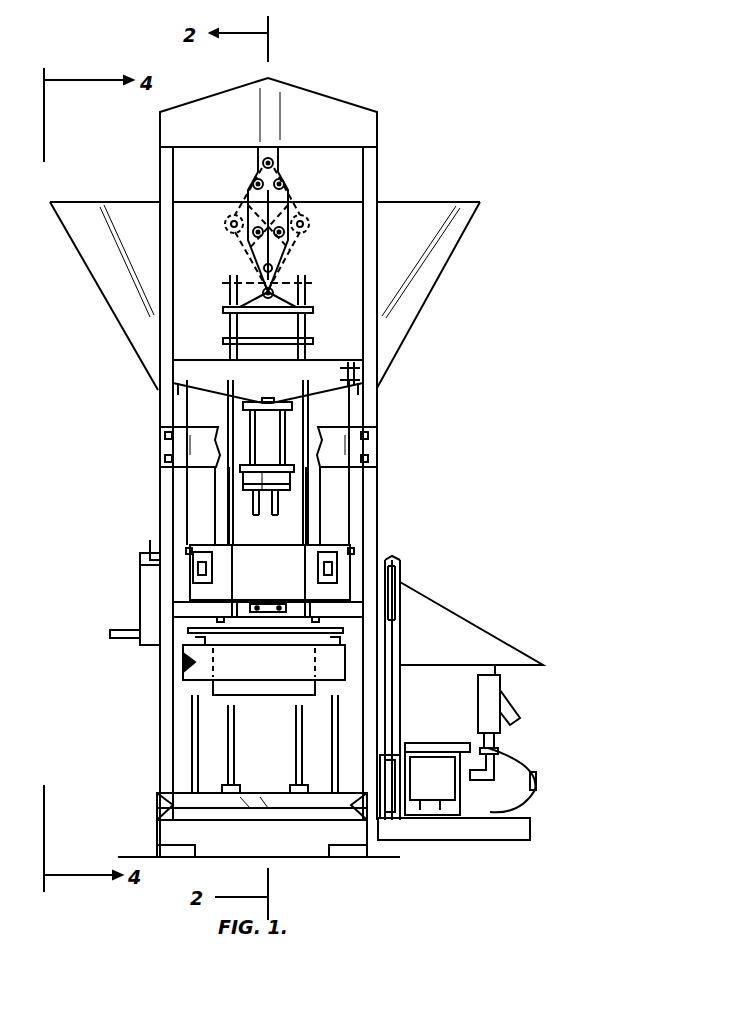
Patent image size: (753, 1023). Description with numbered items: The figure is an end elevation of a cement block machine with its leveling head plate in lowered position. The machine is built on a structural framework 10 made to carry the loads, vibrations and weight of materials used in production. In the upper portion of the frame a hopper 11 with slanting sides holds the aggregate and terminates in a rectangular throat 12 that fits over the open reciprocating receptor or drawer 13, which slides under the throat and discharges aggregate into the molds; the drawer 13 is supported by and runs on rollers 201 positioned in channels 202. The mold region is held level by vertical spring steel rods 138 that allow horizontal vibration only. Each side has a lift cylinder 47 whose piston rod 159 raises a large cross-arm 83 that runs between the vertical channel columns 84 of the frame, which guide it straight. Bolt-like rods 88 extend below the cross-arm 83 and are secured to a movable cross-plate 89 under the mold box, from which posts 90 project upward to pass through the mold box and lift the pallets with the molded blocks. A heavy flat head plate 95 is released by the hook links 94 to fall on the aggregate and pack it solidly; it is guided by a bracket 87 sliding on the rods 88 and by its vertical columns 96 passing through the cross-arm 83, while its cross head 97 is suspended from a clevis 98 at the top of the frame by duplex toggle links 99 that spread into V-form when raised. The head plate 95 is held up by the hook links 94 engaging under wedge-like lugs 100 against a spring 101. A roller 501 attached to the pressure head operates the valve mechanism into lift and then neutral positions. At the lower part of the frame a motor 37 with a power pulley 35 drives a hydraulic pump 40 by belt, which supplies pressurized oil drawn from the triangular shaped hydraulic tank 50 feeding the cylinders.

The framework 10 is at (378, 172).
The hopper 11 is at (445, 262).
The clevis 98 is at (276, 155).
The duplex toggle links 99 is at (236, 212).
The cross head 97 is at (314, 305).
The cross-arm 83 is at (358, 380).
The rods 88 is at (174, 404).
The lift cylinders 47 is at (284, 430).
The piston rods 159 is at (268, 402).
The hook links 94 is at (283, 505).
The vertical channel columns 84 is at (160, 458).
The spring 101 is at (281, 503).
The vertical columns 96 is at (228, 497).
The rectangular throat 12 is at (310, 542).
The receptor or drawer 13 is at (274, 582).
The lugs 100 is at (286, 602).
The channels 202 is at (188, 546).
The rollers 201 is at (198, 566).
The bracket 87 is at (185, 610).
The roller 501 is at (162, 618).
The head plate 95 is at (190, 626).
The cross-plate 89 is at (282, 806).
The vertical spring steel rods 138 is at (192, 731).
The posts 90 is at (296, 748).
The hydraulic tank 50 is at (470, 615).
The motor 37 is at (518, 760).
The hydraulic pump 40 is at (447, 792).
The power pulley 35 is at (385, 806).